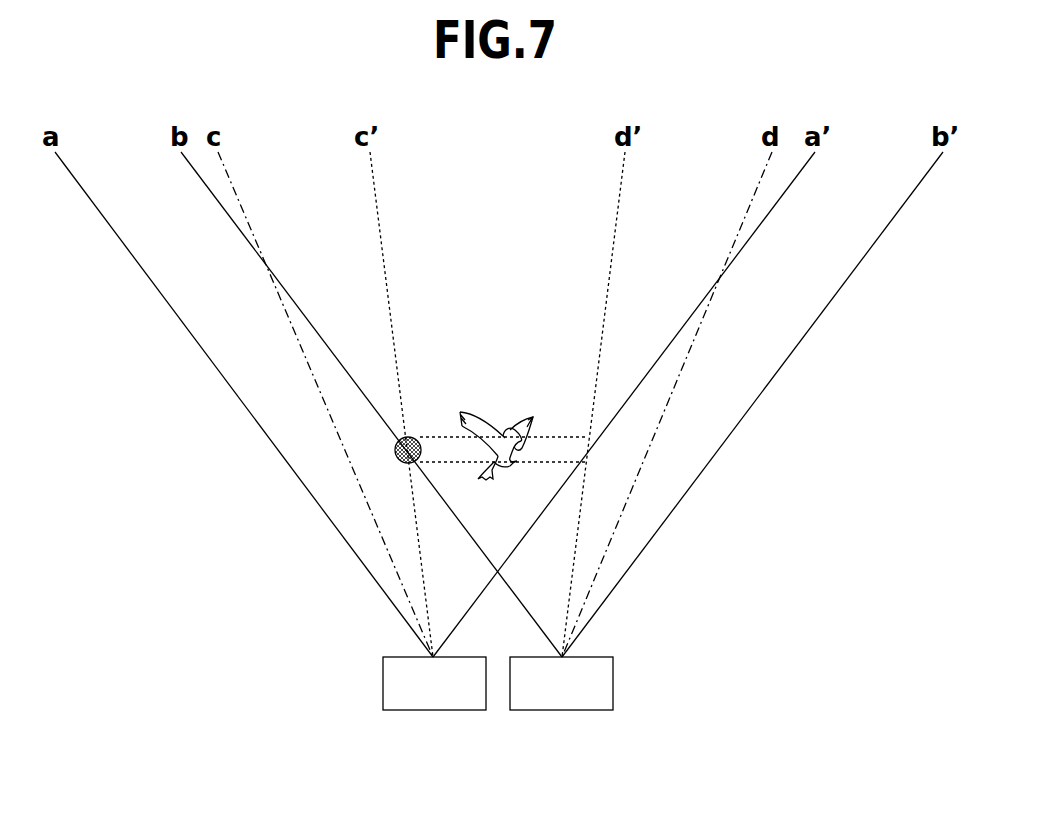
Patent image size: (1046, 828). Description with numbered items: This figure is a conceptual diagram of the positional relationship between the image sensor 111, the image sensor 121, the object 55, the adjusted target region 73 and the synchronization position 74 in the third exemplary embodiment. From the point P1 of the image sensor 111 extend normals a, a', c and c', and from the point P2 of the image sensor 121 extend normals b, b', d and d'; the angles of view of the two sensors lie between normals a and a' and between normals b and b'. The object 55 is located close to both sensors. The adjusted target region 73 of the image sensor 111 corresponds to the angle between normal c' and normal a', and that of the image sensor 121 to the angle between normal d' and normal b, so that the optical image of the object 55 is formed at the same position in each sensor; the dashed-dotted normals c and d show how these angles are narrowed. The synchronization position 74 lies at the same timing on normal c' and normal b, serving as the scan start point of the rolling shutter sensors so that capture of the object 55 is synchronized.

The object 55 is at (531, 417).
The adjusted target region 73 is at (432, 437).
The synchronization position 74 is at (405, 462).
The image sensor 111 is at (432, 710).
The image sensor 121 is at (562, 710).
The point p1 P1 is at (433, 659).
The point p2 P2 is at (562, 659).